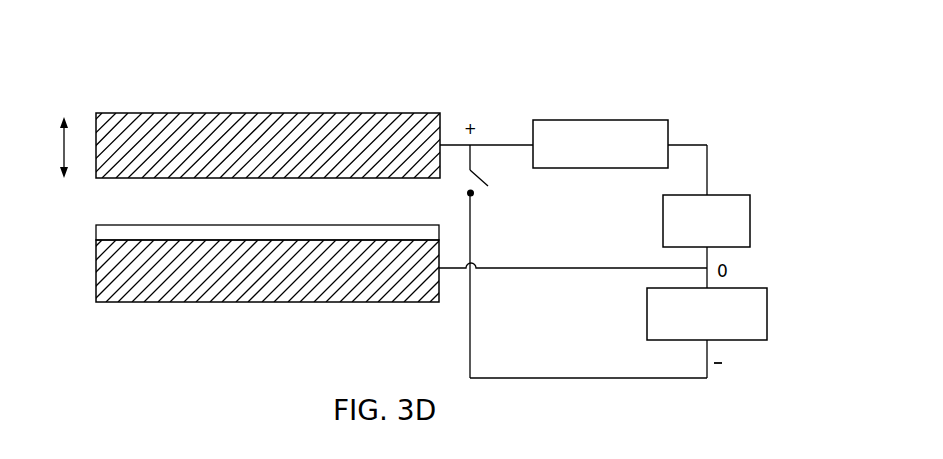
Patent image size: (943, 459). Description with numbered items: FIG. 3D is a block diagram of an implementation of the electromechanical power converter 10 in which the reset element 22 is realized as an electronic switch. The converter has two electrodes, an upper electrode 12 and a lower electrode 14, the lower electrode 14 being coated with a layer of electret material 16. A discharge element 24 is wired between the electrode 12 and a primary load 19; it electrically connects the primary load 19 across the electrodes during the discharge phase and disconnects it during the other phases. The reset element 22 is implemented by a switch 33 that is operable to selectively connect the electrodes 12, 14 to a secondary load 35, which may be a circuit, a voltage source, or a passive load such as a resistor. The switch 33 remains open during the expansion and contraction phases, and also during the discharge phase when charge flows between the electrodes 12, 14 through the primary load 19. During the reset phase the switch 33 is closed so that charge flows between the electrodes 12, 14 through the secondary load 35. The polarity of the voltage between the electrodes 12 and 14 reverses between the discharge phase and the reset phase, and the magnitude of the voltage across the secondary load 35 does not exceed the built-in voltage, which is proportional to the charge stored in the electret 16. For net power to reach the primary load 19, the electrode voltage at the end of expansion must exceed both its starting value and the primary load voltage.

The electromechanical power converter 10 is at (80, 95).
The electrode 12 is at (392, 113).
The electrode 14 is at (350, 303).
The electret material layer 16 is at (96, 236).
The primary load 19 is at (663, 219).
The reset element 22 is at (487, 202).
The discharge element 24 is at (563, 120).
The switch 33 is at (477, 175).
The secondary load 35 is at (647, 312).